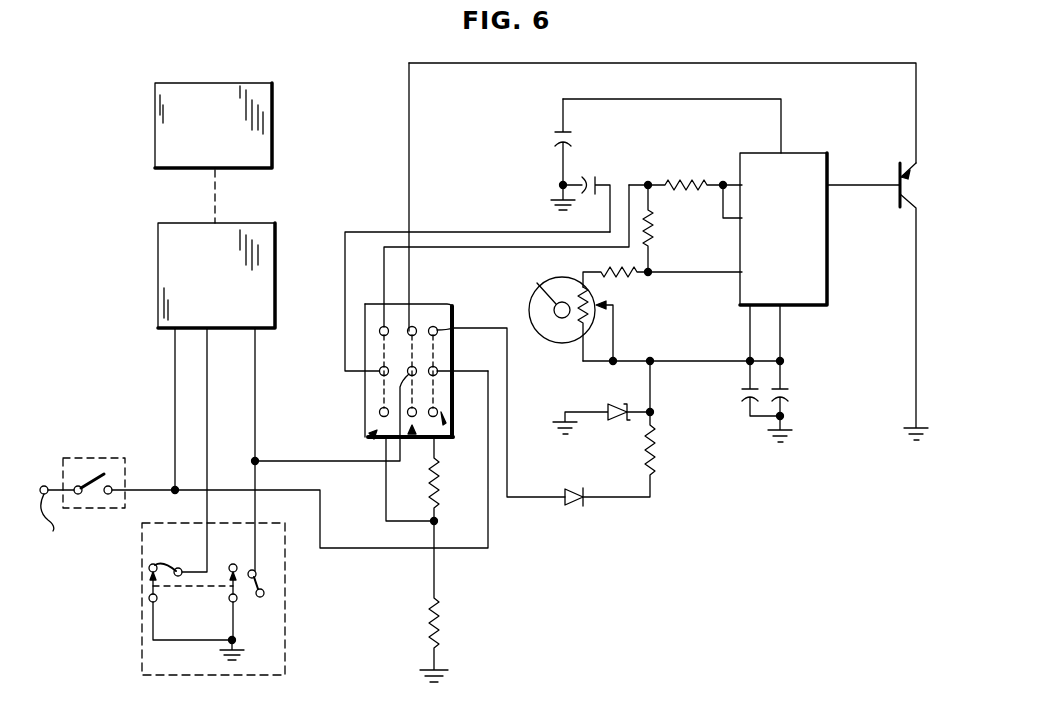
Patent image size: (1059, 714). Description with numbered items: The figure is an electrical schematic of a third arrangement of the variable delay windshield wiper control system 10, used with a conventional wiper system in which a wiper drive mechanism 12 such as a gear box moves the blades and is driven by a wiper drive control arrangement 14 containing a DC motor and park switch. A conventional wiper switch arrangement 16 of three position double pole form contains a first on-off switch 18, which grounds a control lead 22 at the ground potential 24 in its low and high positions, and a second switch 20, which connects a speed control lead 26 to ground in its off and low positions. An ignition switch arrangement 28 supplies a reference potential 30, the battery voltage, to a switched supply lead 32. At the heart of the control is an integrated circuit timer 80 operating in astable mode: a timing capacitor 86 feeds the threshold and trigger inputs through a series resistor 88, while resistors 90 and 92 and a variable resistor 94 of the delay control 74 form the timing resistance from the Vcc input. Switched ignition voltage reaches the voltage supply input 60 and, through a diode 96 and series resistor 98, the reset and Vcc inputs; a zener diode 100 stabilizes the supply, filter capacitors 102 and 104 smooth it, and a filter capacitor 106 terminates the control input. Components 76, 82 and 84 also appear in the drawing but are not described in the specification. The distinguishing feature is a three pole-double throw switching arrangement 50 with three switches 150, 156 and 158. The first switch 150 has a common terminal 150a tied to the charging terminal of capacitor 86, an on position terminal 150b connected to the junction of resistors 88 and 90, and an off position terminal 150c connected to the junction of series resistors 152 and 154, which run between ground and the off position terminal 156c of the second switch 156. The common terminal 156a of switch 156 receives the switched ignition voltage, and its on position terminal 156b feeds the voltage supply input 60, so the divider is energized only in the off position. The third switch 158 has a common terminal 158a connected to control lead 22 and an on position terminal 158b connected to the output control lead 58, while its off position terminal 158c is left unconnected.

The variable delay windshield wiper control system 10 is at (729, 59).
The wiper drive mechanism 12 is at (155, 128).
The wiper drive control arrangement 14 is at (158, 232).
The wiper switch arrangement 16 is at (160, 675).
The first three position on-off switch 18 is at (291, 620).
The second three position switch 20 is at (138, 557).
The control lead 22 is at (257, 370).
The ground potential 24 is at (235, 642).
The speed control lead 26 is at (207, 402).
The ignition switch arrangement 28 is at (107, 430).
The reference potential 30 is at (49, 525).
The switched supply lead 32 is at (360, 550).
The switching arrangement 50 is at (422, 282).
The output control lead 58 is at (658, 60).
The voltage supply input 60 is at (530, 498).
The delay control 74 is at (535, 331).
The adjustment knob 76 is at (537, 283).
The integrated circuit timer 80 is at (812, 152).
The output lead 82 is at (851, 183).
The transistor 84 is at (904, 165).
The timing capacitor 86 is at (592, 180).
The series resistor 88 is at (698, 175).
The resistor 90 is at (654, 228).
The resistor 92 is at (602, 269).
The variable resistor 94 is at (608, 299).
The diode 96 is at (578, 507).
The series resistor 98 is at (660, 460).
The zener diode 100 is at (618, 424).
The filter capacitor 102 is at (790, 397).
The filter capacitor 104 is at (742, 398).
The filter capacitor 106 is at (554, 133).
The first switch 150 is at (370, 437).
The common terminal 150a is at (381, 375).
The on position terminal 150b is at (380, 328).
The off position terminal 150c is at (380, 411).
The resistor 152 is at (440, 483).
The resistor 154 is at (440, 622).
The second switch 156 is at (446, 436).
The common terminal 156a is at (437, 367).
The on position terminal 156b is at (455, 314).
The off position terminal 156c is at (437, 411).
The third switch 158 is at (412, 436).
The common terminal 158a is at (408, 368).
The on position terminal 158b is at (415, 327).
The off position terminal 158c is at (408, 414).